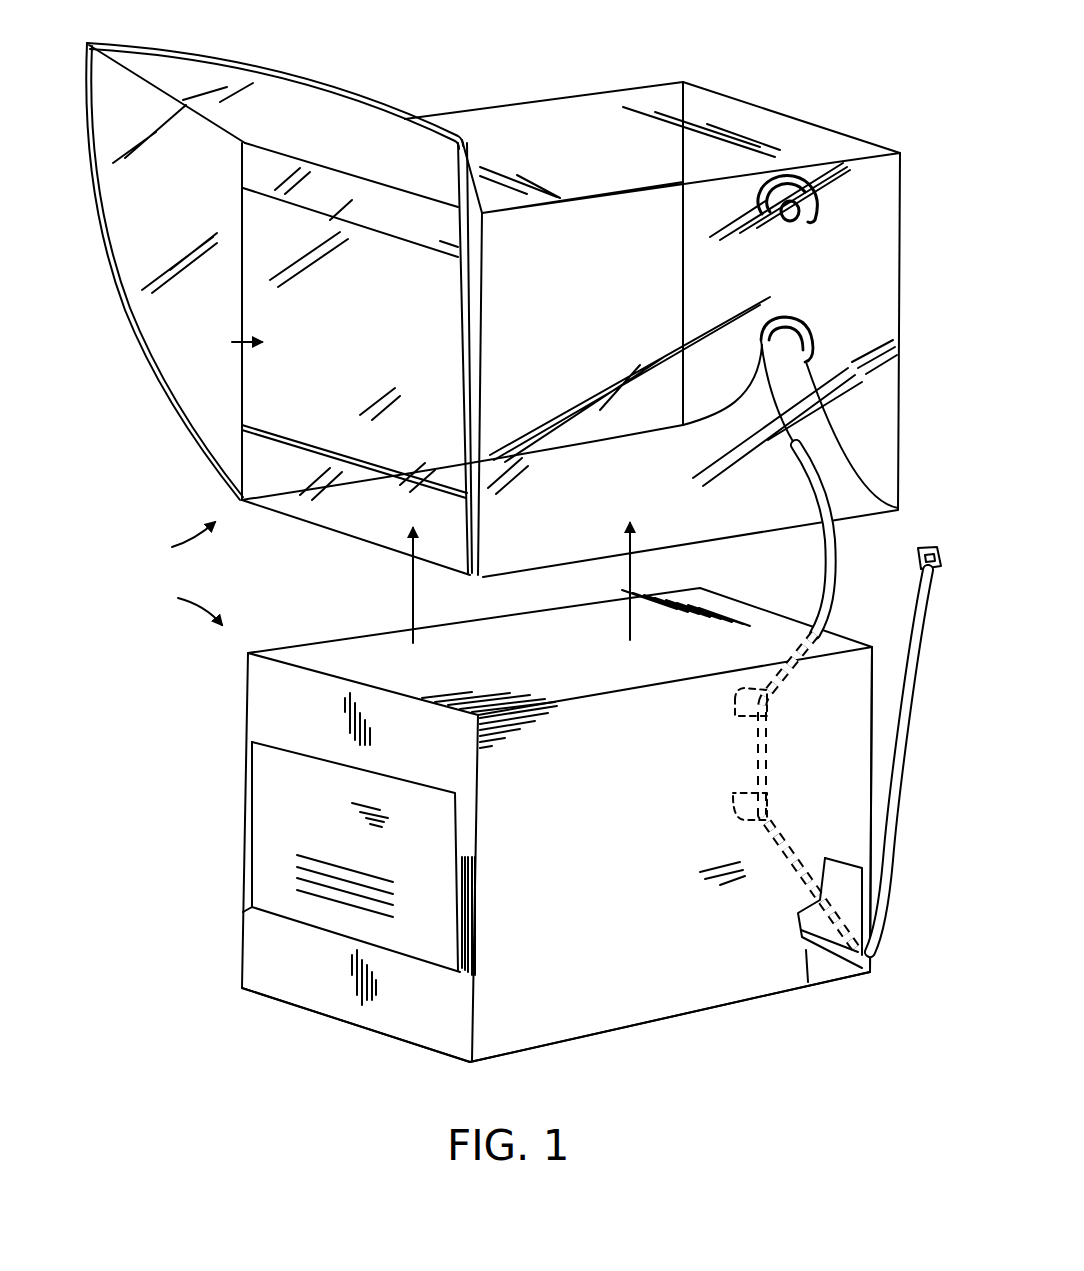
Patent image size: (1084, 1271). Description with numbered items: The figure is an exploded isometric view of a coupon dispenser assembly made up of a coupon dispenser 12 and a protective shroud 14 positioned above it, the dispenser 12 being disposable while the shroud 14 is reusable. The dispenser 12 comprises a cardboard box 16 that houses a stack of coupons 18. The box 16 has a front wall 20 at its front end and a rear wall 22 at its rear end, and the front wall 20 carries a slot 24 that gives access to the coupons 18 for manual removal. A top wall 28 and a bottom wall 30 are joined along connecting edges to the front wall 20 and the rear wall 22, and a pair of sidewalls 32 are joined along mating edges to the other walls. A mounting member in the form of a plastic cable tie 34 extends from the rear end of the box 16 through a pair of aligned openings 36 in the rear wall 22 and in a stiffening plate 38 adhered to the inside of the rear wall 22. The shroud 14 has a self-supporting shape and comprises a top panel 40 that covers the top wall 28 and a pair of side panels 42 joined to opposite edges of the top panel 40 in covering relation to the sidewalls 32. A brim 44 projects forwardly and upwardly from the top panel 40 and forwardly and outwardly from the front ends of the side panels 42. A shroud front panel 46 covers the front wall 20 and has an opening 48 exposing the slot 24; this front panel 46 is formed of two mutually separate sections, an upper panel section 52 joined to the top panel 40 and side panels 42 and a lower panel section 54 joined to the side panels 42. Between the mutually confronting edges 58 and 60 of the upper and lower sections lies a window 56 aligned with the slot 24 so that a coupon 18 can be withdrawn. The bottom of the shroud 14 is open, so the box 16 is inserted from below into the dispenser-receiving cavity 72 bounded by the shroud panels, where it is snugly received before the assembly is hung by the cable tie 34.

The coupon dispenser 12 is at (185, 606).
The protective shroud 14 is at (177, 541).
The box 16 is at (356, 650).
The coupons 18 is at (258, 840).
The front wall 20 is at (332, 986).
The rear wall 22 is at (872, 660).
The slot 24 is at (478, 965).
The top wall 28 is at (532, 668).
The bottom wall 30 is at (645, 1030).
The sidewalls 32 is at (250, 683).
The cable tie 34 is at (903, 802).
The aligned openings 36 is at (735, 720).
The stiffening plate 38 is at (843, 870).
The top panel 40 is at (556, 98).
The side panels 42 is at (377, 339).
The brim 44 is at (210, 78).
The front panel 46 is at (244, 160).
The opening 48 is at (440, 417).
The upper panel section 52 is at (430, 232).
The lower panel section 54 is at (275, 504).
The window 56 is at (440, 369).
The edge 58 is at (320, 205).
The edge 60 is at (290, 435).
The dispenser-receiving cavity 72 is at (232, 342).